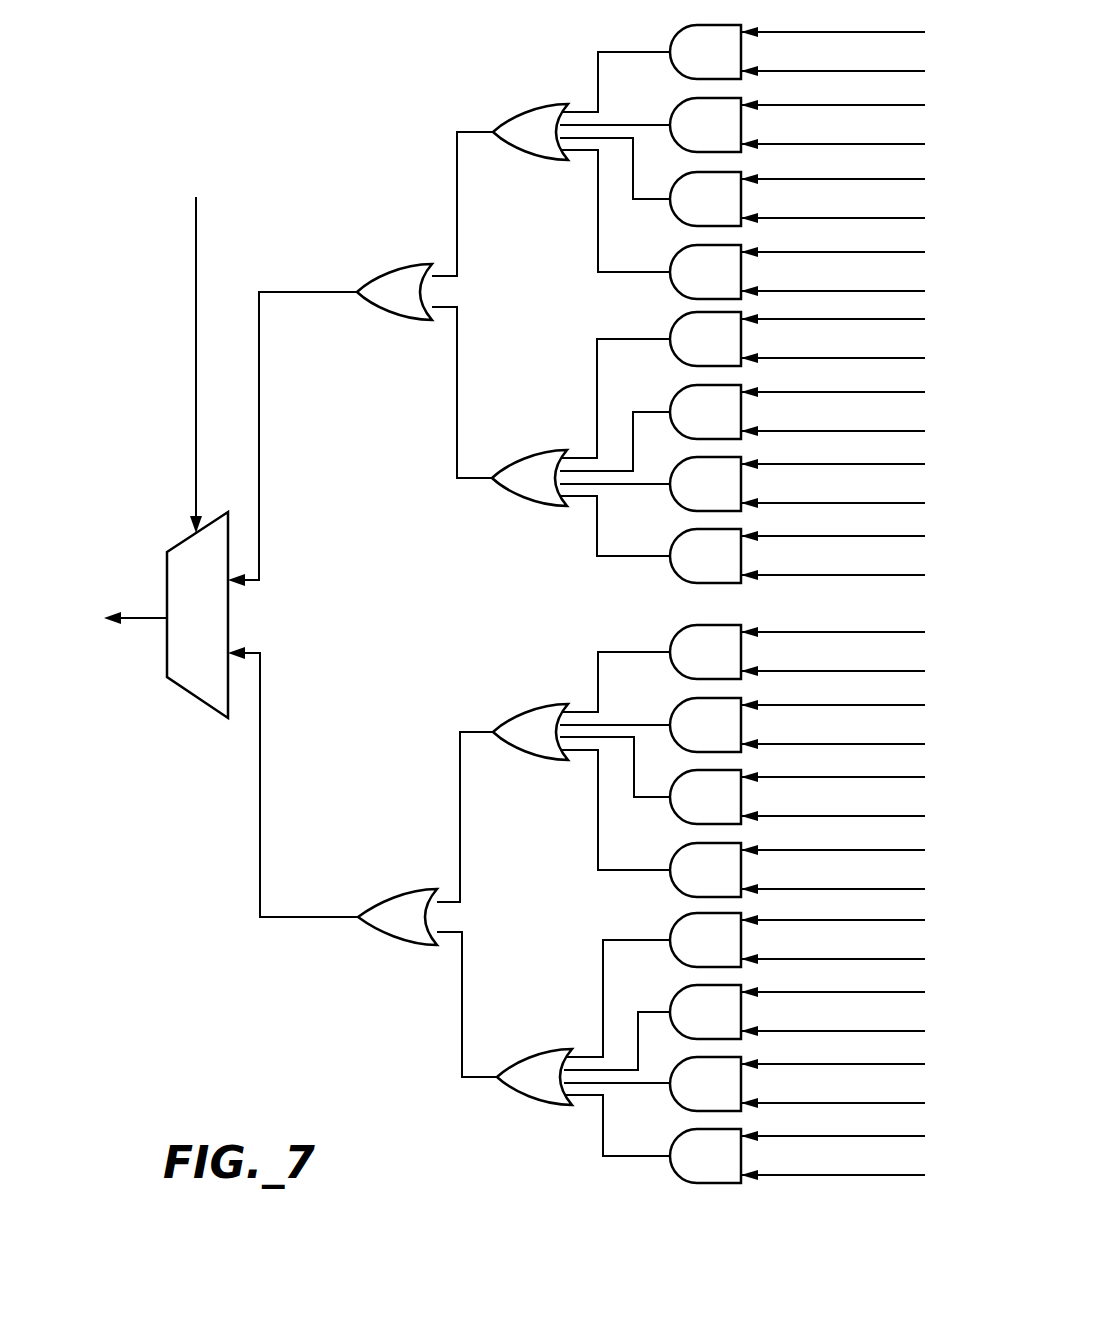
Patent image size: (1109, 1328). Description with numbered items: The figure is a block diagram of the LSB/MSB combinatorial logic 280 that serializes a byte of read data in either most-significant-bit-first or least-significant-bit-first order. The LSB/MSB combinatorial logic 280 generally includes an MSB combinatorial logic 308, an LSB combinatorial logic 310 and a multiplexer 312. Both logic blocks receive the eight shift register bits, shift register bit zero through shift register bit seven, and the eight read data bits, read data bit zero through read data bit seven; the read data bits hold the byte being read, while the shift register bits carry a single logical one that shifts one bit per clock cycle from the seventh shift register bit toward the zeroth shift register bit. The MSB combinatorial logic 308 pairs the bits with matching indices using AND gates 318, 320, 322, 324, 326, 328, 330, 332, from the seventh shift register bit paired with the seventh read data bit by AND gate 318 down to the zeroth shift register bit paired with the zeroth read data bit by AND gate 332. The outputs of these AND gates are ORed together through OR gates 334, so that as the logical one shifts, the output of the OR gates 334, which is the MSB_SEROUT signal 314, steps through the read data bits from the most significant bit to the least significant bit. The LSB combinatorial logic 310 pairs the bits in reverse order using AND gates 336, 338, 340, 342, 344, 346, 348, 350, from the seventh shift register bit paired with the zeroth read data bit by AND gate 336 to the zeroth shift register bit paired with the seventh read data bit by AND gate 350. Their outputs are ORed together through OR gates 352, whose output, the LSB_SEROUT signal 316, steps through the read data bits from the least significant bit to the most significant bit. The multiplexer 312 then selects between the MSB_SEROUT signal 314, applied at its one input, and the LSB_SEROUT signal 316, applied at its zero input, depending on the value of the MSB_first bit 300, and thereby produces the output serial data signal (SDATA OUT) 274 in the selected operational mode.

The output serial data signal (SDATA OUT) 274 is at (155, 623).
The LSB/MSB combinatorial logic 280 is at (328, 155).
The MSB_first bit 300 is at (195, 392).
The MSB combinatorial logic 308 is at (488, 541).
The LSB combinatorial logic 310 is at (492, 673).
The multiplexer 312 is at (197, 702).
The MSB_SEROUT signal 314 is at (307, 292).
The LSB_SEROUT signal 316 is at (305, 920).
The AND gate 318 is at (689, 63).
The AND gate 320 is at (689, 136).
The AND gate 322 is at (689, 210).
The AND gate 324 is at (689, 283).
The AND gate 326 is at (689, 350).
The AND gate 328 is at (689, 423).
The AND gate 330 is at (689, 495).
The AND gate 332 is at (689, 567).
The OR gates 334 is at (517, 143).
The AND gate 336 is at (689, 663).
The AND gate 338 is at (689, 736).
The AND gate 340 is at (689, 808).
The AND gate 342 is at (689, 881).
The AND gate 344 is at (689, 951).
The AND gate 346 is at (689, 1023).
The AND gate 348 is at (689, 1095).
The AND gate 350 is at (689, 1167).
The OR gates 352 is at (517, 743).